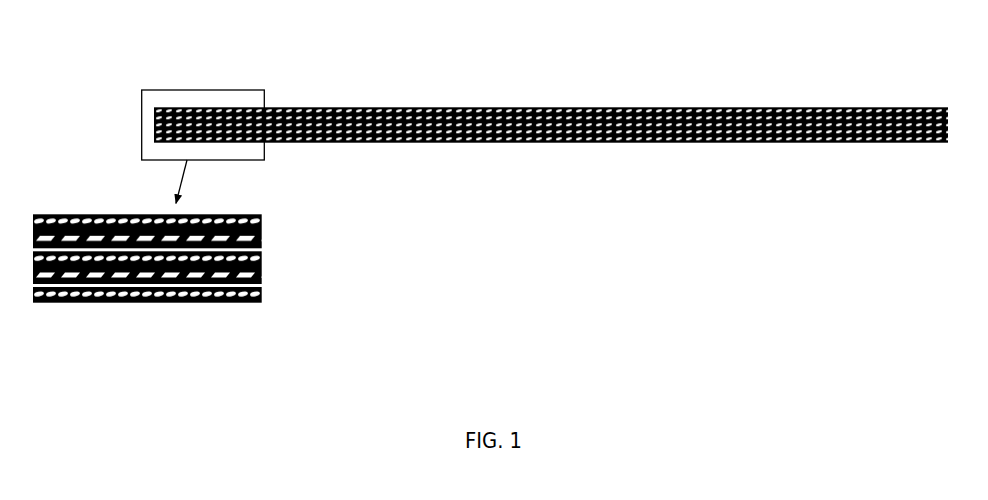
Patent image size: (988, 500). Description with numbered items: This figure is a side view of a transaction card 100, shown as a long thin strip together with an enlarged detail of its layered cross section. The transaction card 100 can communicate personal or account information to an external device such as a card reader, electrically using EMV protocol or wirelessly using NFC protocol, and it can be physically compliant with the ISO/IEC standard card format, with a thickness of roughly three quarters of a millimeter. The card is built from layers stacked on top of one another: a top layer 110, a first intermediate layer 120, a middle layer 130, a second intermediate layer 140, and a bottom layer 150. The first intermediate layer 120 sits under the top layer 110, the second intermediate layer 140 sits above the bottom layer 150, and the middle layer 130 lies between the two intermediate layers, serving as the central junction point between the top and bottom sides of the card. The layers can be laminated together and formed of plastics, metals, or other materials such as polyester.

The transaction card 100 is at (173, 110).
The top layer 110 is at (262, 218).
The first intermediate layer 120 is at (262, 238).
The middle layer 130 is at (262, 260).
The second intermediate layer 140 is at (262, 275).
The bottom layer 150 is at (262, 298).